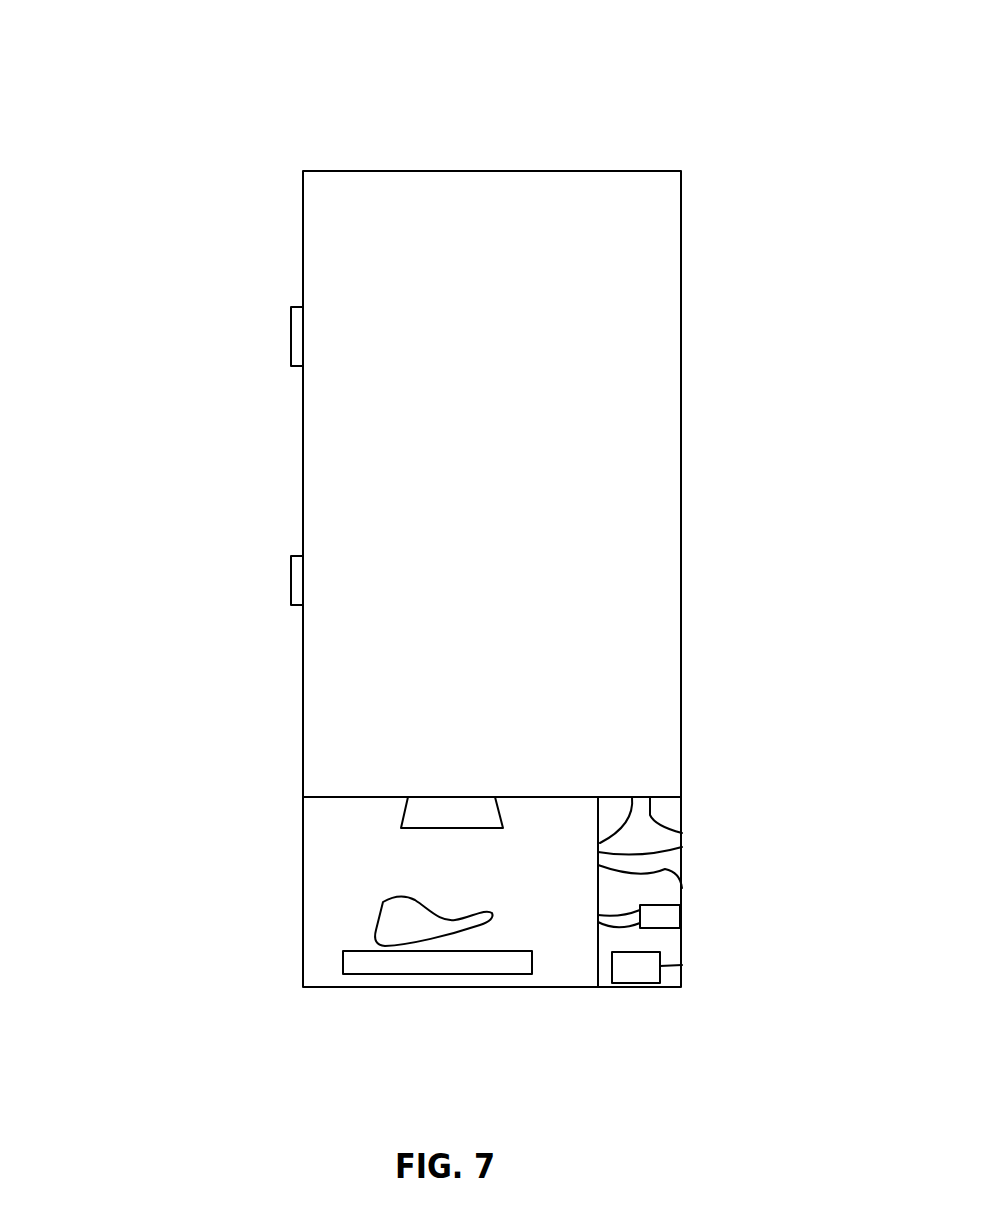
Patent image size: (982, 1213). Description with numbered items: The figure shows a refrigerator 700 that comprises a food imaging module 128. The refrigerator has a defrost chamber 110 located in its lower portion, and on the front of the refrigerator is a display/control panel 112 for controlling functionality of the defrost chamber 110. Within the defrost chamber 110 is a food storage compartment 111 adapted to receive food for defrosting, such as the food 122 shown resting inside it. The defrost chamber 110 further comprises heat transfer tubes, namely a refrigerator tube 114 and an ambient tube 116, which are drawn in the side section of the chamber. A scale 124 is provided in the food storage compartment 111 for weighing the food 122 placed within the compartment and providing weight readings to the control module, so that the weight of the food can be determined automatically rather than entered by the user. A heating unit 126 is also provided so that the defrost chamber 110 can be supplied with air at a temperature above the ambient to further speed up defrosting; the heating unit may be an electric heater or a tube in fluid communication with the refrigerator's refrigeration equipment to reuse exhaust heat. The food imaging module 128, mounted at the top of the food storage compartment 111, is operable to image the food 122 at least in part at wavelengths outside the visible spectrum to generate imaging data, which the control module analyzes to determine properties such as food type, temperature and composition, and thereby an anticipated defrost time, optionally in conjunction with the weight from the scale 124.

The refrigerator 700 is at (137, 138).
The defrost chamber 110 is at (543, 745).
The food storage compartment 111 is at (572, 797).
The display/control panel 112 is at (292, 337).
The refrigerator tube 114 is at (682, 833).
The ambient tube 116 is at (682, 888).
The food 122 is at (437, 937).
The scale 124 is at (447, 975).
The heating unit 126 is at (662, 928).
The food imaging module 128 is at (503, 818).